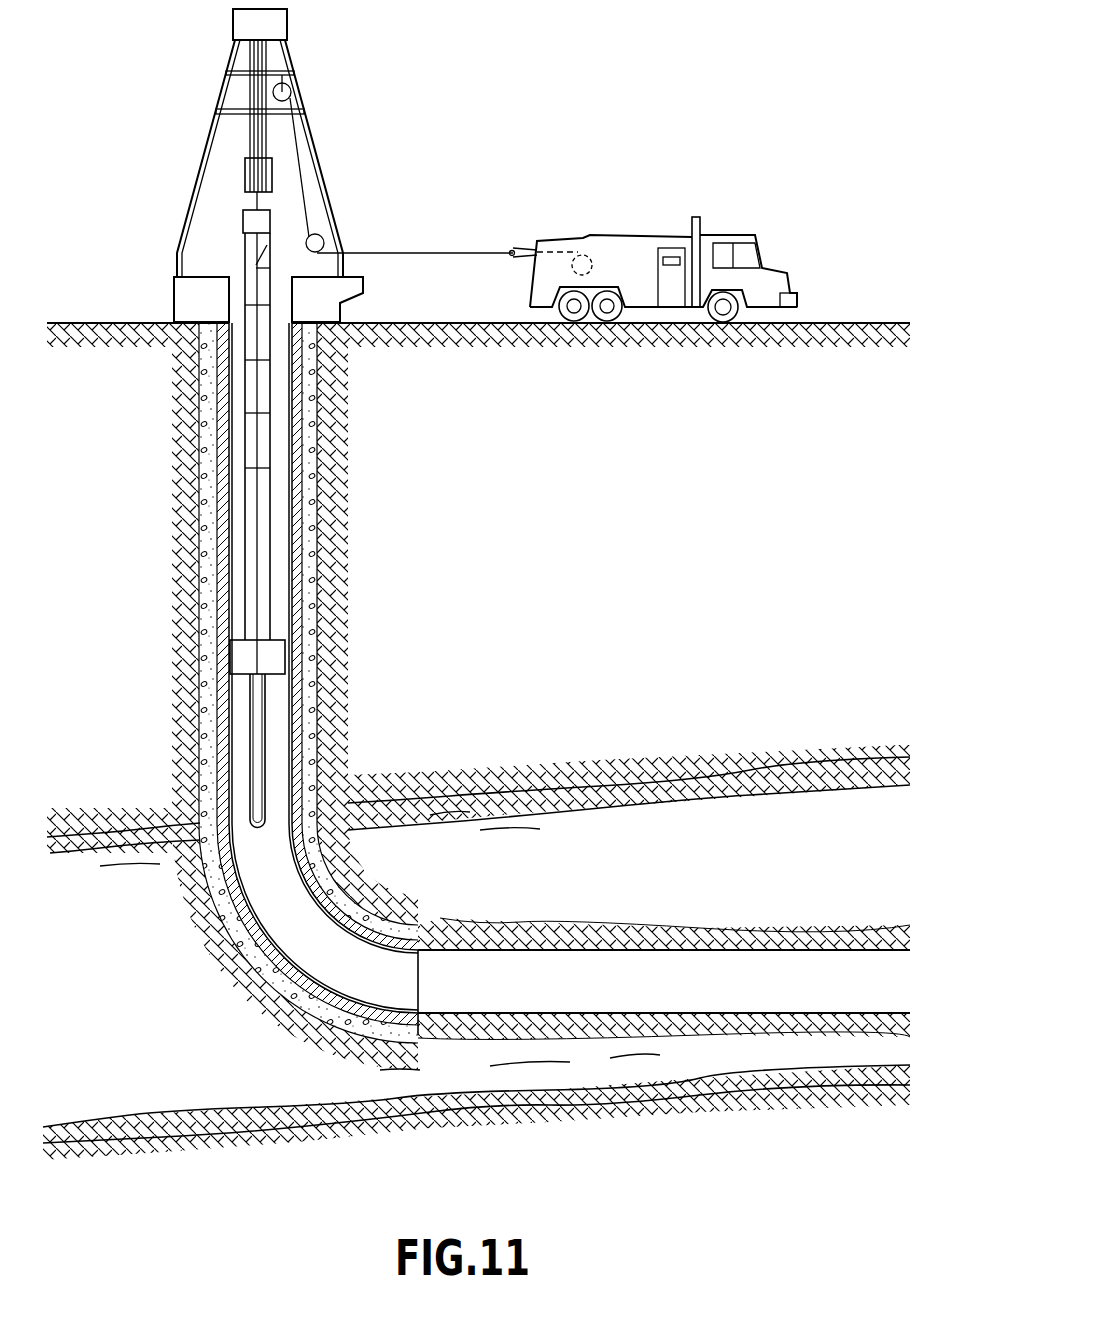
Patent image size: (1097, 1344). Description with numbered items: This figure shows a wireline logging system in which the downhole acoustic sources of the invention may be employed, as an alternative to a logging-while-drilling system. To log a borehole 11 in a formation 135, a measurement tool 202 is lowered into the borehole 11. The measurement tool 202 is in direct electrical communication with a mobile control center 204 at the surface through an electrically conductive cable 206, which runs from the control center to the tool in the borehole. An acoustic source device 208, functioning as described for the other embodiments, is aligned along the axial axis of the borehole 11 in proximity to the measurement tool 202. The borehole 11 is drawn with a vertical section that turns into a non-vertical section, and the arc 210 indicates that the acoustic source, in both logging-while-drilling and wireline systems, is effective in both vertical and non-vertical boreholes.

The electrically conductive cable 206 is at (324, 183).
The mobile control center 204 is at (627, 237).
The borehole 11 is at (302, 556).
The formation 135 is at (158, 630).
The acoustic source device 208 is at (276, 662).
The measurement tool 202 is at (272, 772).
The arc 210 is at (418, 1036).